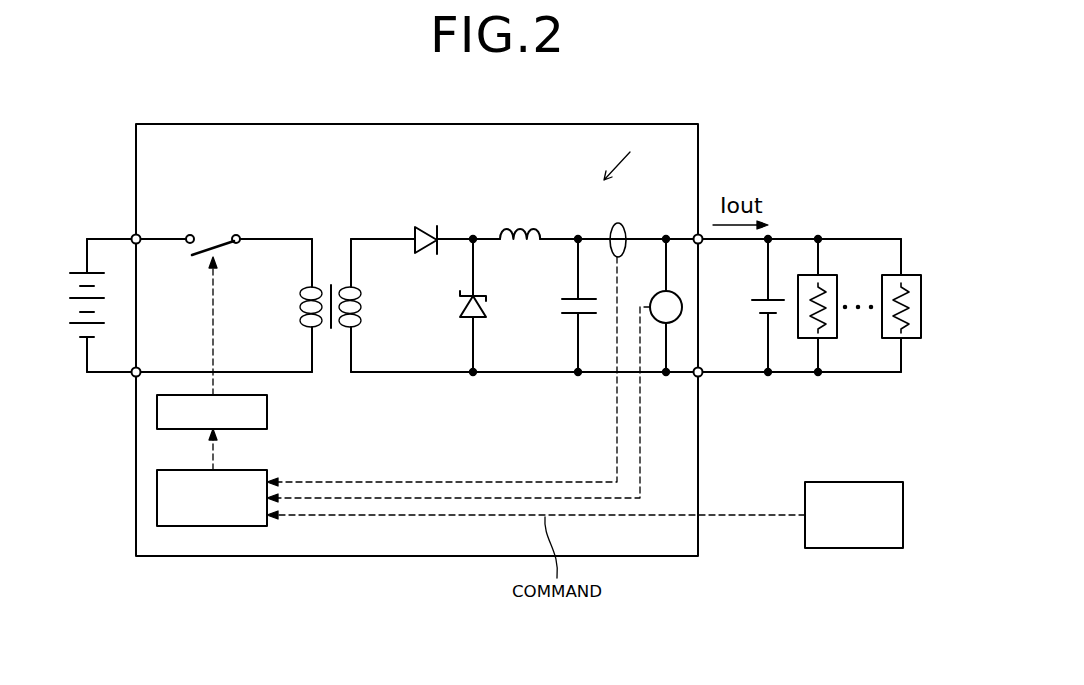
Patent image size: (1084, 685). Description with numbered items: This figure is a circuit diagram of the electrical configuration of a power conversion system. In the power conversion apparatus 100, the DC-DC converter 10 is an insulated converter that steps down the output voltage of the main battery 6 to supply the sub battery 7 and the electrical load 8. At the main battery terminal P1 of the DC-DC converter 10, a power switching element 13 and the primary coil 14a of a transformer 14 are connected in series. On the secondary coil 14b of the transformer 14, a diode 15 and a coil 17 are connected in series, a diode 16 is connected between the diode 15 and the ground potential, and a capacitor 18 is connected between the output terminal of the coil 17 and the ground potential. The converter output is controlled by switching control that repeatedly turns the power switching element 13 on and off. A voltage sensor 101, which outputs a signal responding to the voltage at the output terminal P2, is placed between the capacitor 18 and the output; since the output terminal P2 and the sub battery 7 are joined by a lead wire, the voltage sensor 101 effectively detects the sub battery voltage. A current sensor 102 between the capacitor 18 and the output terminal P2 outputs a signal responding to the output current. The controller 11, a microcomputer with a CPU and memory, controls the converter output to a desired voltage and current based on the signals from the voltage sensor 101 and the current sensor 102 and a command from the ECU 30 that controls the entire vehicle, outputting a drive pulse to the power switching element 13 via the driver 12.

The power conversion apparatus 100 is at (620, 123).
The DC-DC converter 10 is at (636, 154).
The main battery 6 is at (73, 271).
The main battery terminal P1 is at (132, 236).
The power switching element 13 is at (207, 247).
The transformer 14 is at (333, 281).
The primary coil 14a is at (300, 298).
The secondary coil 14b is at (361, 305).
The diode 15 is at (416, 232).
The diode 16 is at (487, 306).
The coil 17 is at (504, 231).
The capacitor 18 is at (573, 298).
The current sensor 102 is at (612, 226).
The voltage sensor 101 is at (657, 292).
The output terminal P2 is at (701, 235).
The sub battery 7 is at (770, 299).
The electrical load 8 is at (894, 275).
The driver 12 is at (268, 408).
The controller 11 is at (243, 470).
The ECU 30 is at (860, 482).